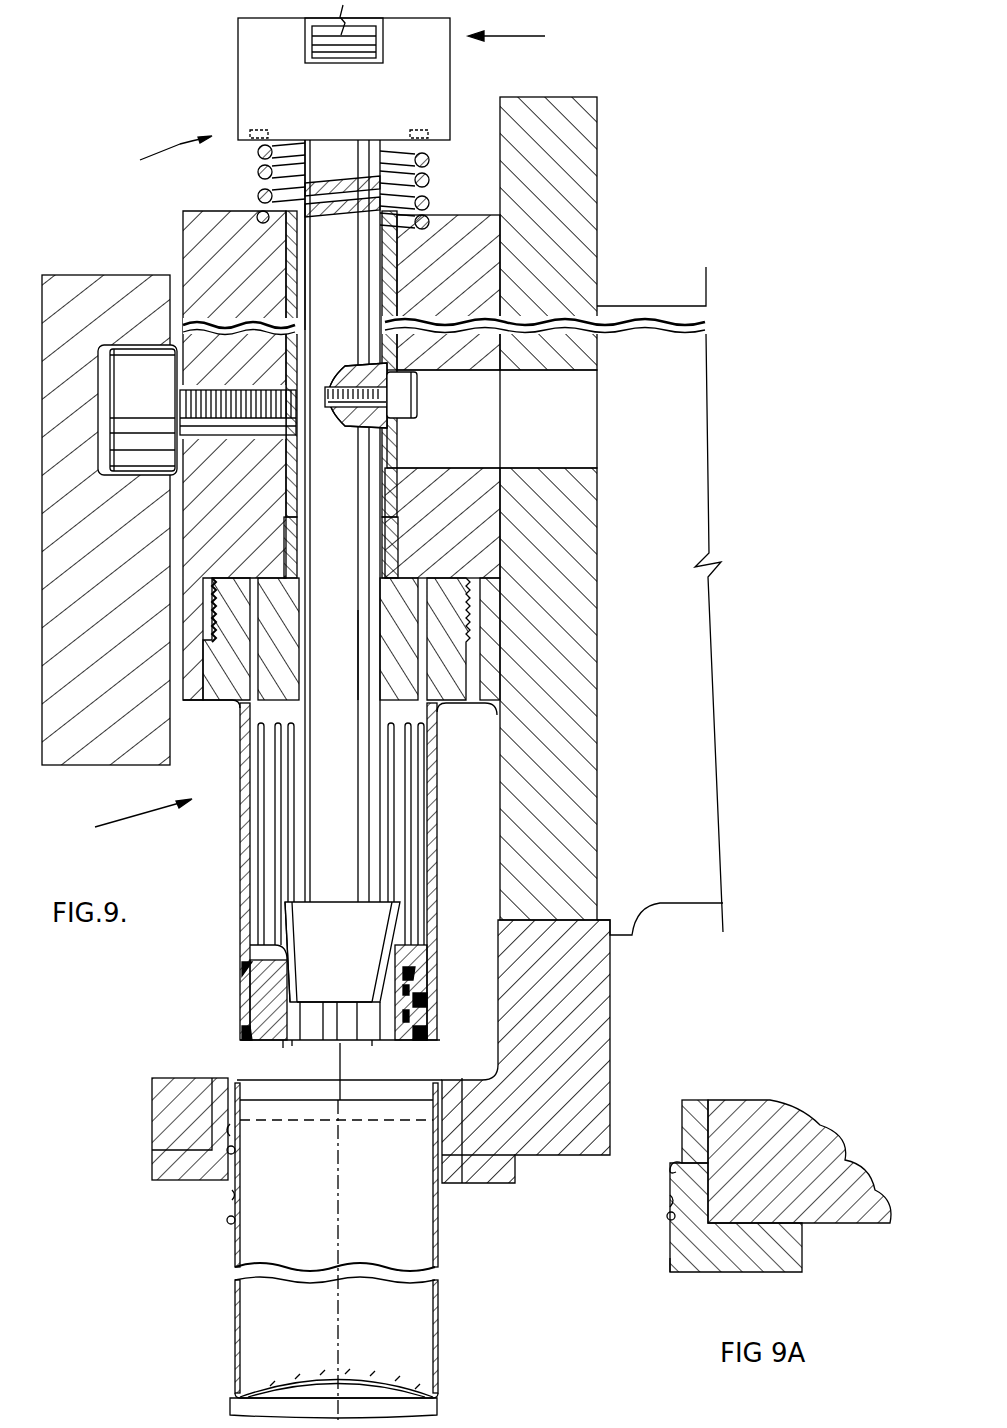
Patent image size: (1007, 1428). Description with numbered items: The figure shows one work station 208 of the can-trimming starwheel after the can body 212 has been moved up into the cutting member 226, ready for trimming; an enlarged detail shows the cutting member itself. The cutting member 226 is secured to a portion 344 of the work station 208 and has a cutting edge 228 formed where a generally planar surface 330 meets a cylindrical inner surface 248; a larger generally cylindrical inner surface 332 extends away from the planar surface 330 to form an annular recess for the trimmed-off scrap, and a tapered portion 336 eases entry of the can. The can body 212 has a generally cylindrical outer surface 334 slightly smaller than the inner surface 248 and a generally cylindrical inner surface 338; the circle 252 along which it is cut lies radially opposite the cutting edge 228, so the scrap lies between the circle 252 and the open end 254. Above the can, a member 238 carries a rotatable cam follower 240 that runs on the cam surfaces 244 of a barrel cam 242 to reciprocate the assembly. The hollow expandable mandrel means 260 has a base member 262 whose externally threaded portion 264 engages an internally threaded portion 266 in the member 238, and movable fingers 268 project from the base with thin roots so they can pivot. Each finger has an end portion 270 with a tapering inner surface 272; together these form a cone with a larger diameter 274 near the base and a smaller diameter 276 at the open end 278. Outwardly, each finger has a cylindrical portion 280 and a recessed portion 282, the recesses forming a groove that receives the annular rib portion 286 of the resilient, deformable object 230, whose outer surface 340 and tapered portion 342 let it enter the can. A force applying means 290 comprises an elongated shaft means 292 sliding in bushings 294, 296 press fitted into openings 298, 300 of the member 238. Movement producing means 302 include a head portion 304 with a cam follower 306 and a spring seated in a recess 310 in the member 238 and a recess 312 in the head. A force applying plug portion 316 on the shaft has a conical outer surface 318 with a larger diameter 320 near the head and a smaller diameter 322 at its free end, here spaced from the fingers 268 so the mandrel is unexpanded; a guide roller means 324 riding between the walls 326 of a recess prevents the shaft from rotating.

In FIG. 9, the work station 208 is at (597, 827).
In FIG. 9, the can body 212 is at (299, 1250).
In FIG. 9A, the cutting member 226 is at (698, 1255).
In FIG. 9, the cutting edge 228 is at (238, 1130).
In FIG. 9A, the cutting edge 228 is at (666, 1178).
In FIG. 9, the resilient, deformable object 230 is at (240, 982).
In FIG. 9, the member 238 is at (214, 506).
In FIG. 9, the rotatable cam follower 240 is at (128, 352).
In FIG. 9, the barrel cam 242 is at (83, 616).
In FIG. 9, the cam surfaces 244 is at (100, 446).
In FIG. 9, the cylindrical inner surface 248 is at (235, 1154).
In FIG. 9A, the cylindrical inner surface 248 is at (670, 1220).
In FIG. 9, the circle 252 is at (391, 1124).
In FIG. 9, the open end 254 is at (262, 1057).
In FIG. 9, the expandable mandrel means 260 is at (118, 819).
In FIG. 9, the base member 262 is at (212, 702).
In FIG. 9, the externally threaded portion 264 is at (232, 584).
In FIG. 9, the internally threaded portion 266 is at (211, 578).
In FIG. 9, the movable fingers 268 is at (280, 845).
In FIG. 9, the end portion 270 is at (260, 990).
In FIG. 9, the inner surface 272 is at (292, 1046).
In FIG. 9, the larger diameter 274 is at (278, 945).
In FIG. 9, the smaller diameter 276 is at (373, 1046).
In FIG. 9, the open end 278 is at (344, 1062).
In FIG. 9, the generally cylindrical portion 280 is at (420, 1014).
In FIG. 9, the recessed portion 282 is at (422, 983).
In FIG. 9, the annular rib portion 286 is at (415, 970).
In FIG. 9, the force applying means 290 is at (148, 155).
In FIG. 9, the elongated shaft means 292 is at (323, 531).
In FIG. 9, the bushing 294 is at (388, 280).
In FIG. 9, the bushing 296 is at (388, 548).
In FIG. 9, the opening 298 is at (378, 232).
In FIG. 9, the opening 300 is at (338, 639).
In FIG. 9, the movement producing means 302 is at (532, 36).
In FIG. 9, the head portion 304 is at (445, 107).
In FIG. 9, the cam follower 306 is at (370, 62).
In FIG. 9, the recess 310 is at (260, 214).
In FIG. 9, the recess 312 is at (266, 130).
In FIG. 9, the force applying plug portion 316 is at (316, 977).
In FIG. 9, the generally conical shaped outer surface 318 is at (398, 920).
In FIG. 9, the larger diameter 320 is at (284, 902).
In FIG. 9, the smaller diameter 322 is at (340, 1023).
In FIG. 9, the guide roller means 324 is at (415, 392).
In FIG. 9, the walls 326 is at (416, 456).
In FIG. 9A, the generally planar surface 330 is at (670, 1162).
In FIG. 9A, the generally cylindrical inner surface 332 is at (682, 1104).
In FIG. 9, the generally cylindrical outer surface 334 is at (232, 1200).
In FIG. 9A, the tapered portion 336 is at (676, 1262).
In FIG. 9, the generally cylindrical inner surface 338 is at (235, 1218).
In FIG. 9, the generally cylindrical outer surface 340 is at (430, 998).
In FIG. 9, the tapered portion 342 is at (432, 1032).
In FIG. 9, the portion 344 is at (565, 1152).
In FIG. 9A, the portion 344 is at (842, 1216).